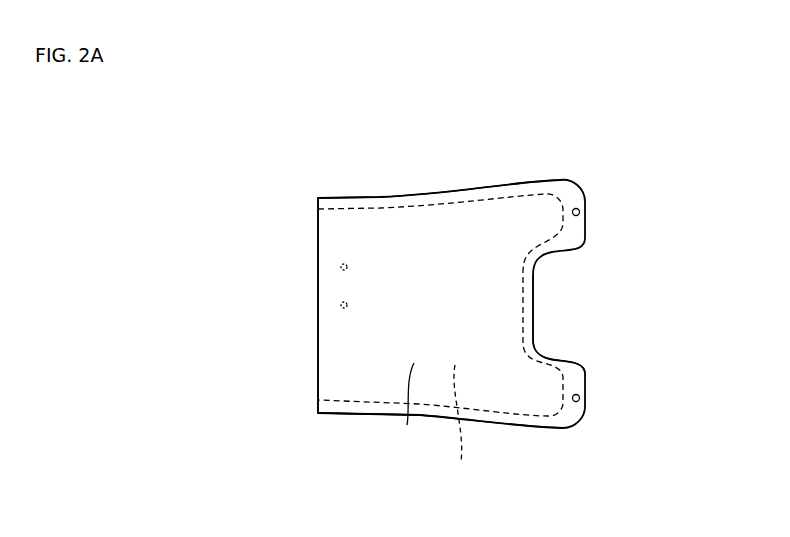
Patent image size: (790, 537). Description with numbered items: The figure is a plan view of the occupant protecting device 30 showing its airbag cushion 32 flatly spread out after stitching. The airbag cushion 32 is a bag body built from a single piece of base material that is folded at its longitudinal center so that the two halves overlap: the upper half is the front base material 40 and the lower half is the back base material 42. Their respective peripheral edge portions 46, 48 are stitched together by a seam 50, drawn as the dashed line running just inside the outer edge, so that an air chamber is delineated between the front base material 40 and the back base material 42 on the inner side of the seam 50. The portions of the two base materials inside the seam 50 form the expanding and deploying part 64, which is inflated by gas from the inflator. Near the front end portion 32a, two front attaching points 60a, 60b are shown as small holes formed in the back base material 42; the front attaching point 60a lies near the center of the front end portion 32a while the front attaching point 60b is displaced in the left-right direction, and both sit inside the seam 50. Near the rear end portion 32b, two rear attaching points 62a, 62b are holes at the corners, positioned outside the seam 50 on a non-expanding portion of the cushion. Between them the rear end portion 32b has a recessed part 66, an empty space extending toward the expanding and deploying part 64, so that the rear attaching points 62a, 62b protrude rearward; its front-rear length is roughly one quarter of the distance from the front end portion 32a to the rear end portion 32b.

The occupant protecting device 30 is at (558, 153).
The airbag cushion 32 is at (383, 197).
The front end portion 32a is at (318, 353).
The rear end portion 32b is at (580, 365).
The front base material 40 is at (405, 407).
The back base material 42 is at (460, 428).
The peripheral edge portion 46 is at (352, 414).
The peripheral edge portion 48 is at (369, 414).
The seam 50 is at (530, 425).
The front attaching point 60a is at (340, 305).
The front attaching point 60b is at (340, 266).
The rear attaching point 62a is at (580, 212).
The rear attaching point 62b is at (580, 398).
The expanding and deploying part 64 is at (460, 232).
The recessed part 66 is at (534, 313).